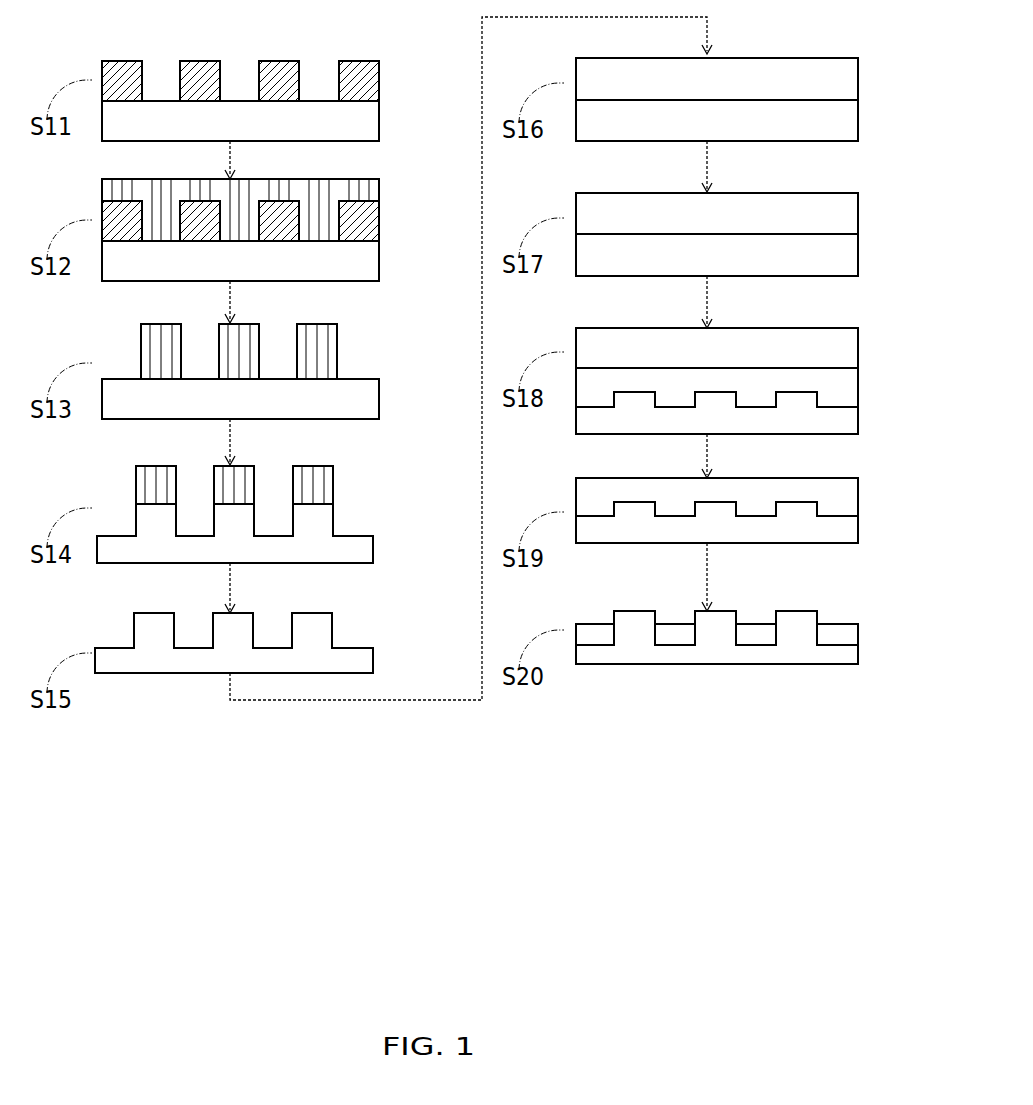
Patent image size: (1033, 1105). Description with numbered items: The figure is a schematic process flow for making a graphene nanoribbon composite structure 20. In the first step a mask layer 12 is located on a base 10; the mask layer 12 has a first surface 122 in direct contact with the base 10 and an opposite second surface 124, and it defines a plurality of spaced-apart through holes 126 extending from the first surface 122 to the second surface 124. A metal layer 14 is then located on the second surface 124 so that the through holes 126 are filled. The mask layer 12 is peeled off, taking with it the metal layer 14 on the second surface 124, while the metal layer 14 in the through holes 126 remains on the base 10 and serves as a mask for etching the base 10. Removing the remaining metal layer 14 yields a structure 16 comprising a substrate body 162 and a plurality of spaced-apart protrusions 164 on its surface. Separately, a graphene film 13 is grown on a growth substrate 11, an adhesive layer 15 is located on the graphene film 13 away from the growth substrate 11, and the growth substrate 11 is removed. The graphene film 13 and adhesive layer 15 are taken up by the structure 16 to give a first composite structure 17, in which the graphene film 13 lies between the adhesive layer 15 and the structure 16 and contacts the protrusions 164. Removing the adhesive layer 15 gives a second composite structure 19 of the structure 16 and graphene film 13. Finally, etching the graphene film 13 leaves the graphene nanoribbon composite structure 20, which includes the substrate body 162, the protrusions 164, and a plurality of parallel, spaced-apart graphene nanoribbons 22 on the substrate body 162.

The base 10 is at (370, 127).
The growth substrate 11 is at (848, 112).
The mask layer 12 is at (378, 75).
The first surface 122 is at (365, 100).
The second surface 124 is at (363, 63).
The through holes 126 is at (236, 73).
The graphene film 13 is at (848, 72).
The metal layer 14 is at (370, 187).
The adhesive layer 15 is at (848, 205).
The structure 16 is at (432, 622).
The substrate body 162 is at (365, 653).
The protrusions 164 is at (323, 637).
The first composite structure 17 is at (908, 358).
The second composite structure 19 is at (908, 508).
The graphene nanoribbon composite structure 20 is at (908, 620).
The graphene nanoribbons 22 is at (838, 640).